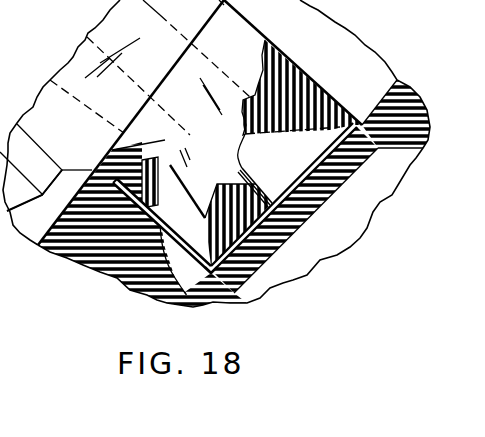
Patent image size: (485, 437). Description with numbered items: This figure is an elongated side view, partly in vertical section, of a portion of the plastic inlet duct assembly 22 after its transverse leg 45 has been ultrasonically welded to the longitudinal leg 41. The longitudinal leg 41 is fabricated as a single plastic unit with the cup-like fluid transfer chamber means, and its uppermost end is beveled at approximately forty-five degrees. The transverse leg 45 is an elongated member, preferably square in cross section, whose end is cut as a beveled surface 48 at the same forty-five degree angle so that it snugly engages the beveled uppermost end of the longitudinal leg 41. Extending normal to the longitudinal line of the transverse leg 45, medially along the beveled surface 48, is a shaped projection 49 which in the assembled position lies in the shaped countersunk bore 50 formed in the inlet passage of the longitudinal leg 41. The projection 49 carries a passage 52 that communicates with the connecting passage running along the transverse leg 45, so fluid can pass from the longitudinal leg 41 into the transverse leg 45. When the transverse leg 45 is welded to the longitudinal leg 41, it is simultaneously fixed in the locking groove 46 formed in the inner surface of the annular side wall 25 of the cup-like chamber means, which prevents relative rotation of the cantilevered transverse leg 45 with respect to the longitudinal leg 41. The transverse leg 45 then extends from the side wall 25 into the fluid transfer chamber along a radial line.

The inlet duct assembly 22 is at (260, 24).
The longitudinal leg 41 is at (97, 163).
The transverse leg 45 is at (318, 84).
The locking groove 46 is at (345, 148).
The beveled surface 48 is at (212, 148).
The shaped projection 49 is at (250, 226).
The countersunk bore 50 is at (213, 272).
The passage 52 is at (209, 273).
The annular side wall 25 is at (314, 207).